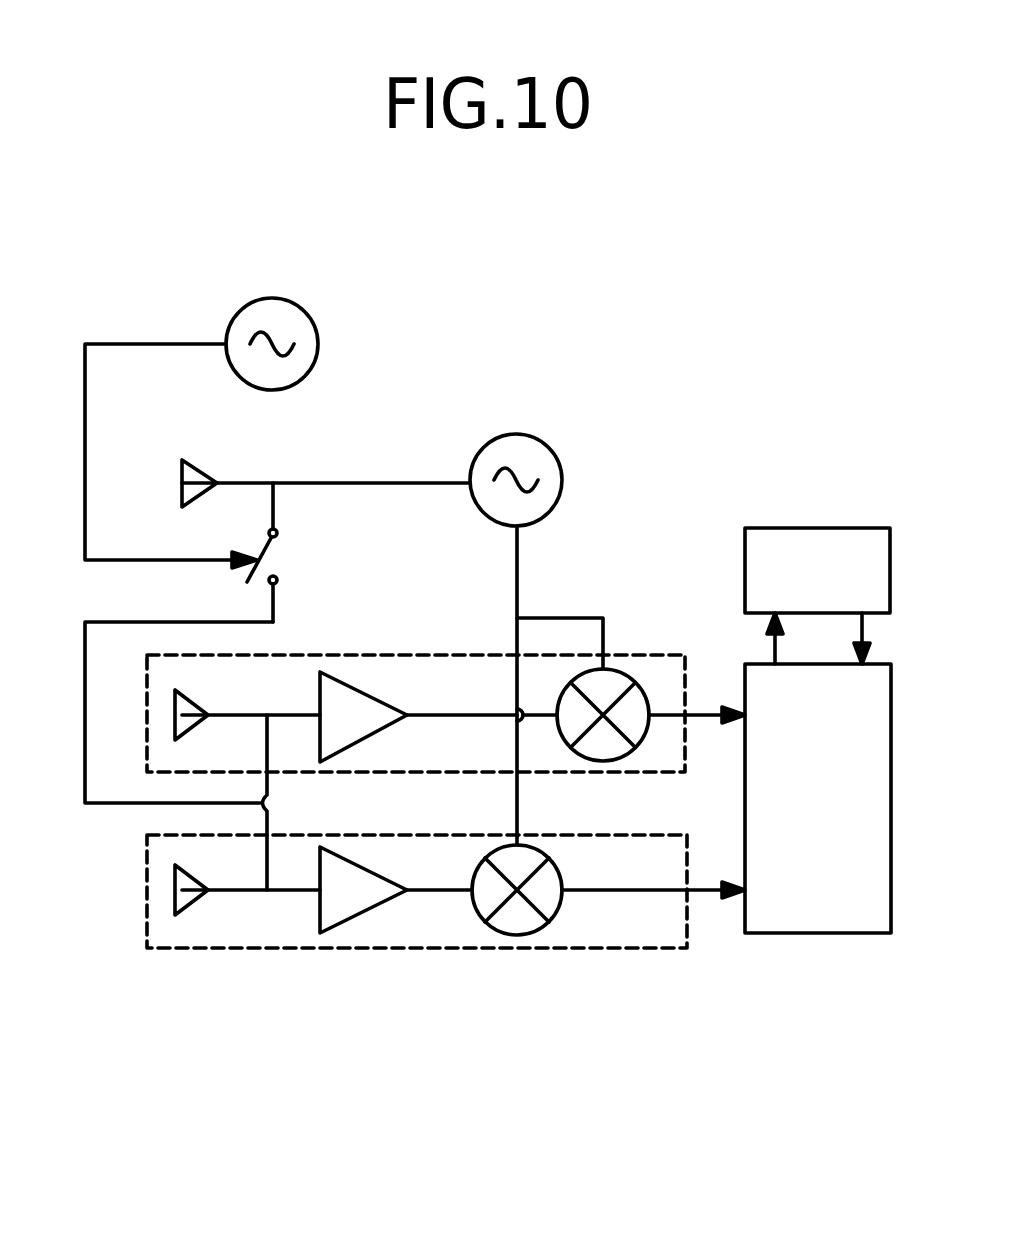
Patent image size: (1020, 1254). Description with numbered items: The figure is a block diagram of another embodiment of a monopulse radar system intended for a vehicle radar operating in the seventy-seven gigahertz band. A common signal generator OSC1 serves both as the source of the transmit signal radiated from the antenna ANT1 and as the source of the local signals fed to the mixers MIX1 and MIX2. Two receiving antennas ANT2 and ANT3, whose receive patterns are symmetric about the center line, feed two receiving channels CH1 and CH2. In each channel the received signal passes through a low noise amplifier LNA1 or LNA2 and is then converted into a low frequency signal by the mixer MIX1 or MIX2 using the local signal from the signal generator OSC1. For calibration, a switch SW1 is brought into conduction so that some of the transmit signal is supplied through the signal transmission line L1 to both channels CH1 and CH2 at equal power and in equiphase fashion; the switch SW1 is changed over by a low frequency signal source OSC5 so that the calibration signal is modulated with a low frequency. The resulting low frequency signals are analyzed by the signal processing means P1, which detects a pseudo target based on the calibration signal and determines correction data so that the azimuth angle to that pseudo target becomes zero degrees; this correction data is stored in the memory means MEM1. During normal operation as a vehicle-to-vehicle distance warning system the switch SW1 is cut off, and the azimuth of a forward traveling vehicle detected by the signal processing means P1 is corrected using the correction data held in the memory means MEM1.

The low frequency signal source OSC5 is at (333, 268).
The antenna ANT1 is at (182, 463).
The switch SW1 is at (282, 544).
The signal transmission line L1 is at (83, 773).
The receiving channel CH1 is at (686, 653).
The receiving channel CH2 is at (677, 950).
The receiving antenna ANT2 is at (176, 705).
The low noise amplifier LNA1 is at (380, 702).
The common signal generator OSC1 is at (536, 437).
The mixer MIX1 is at (620, 668).
The receiving antenna ANT3 is at (175, 908).
The low noise amplifier LNA2 is at (355, 920).
The mixer MIX2 is at (522, 938).
The memory means MEM1 is at (832, 527).
The signal processing means P1 is at (842, 936).